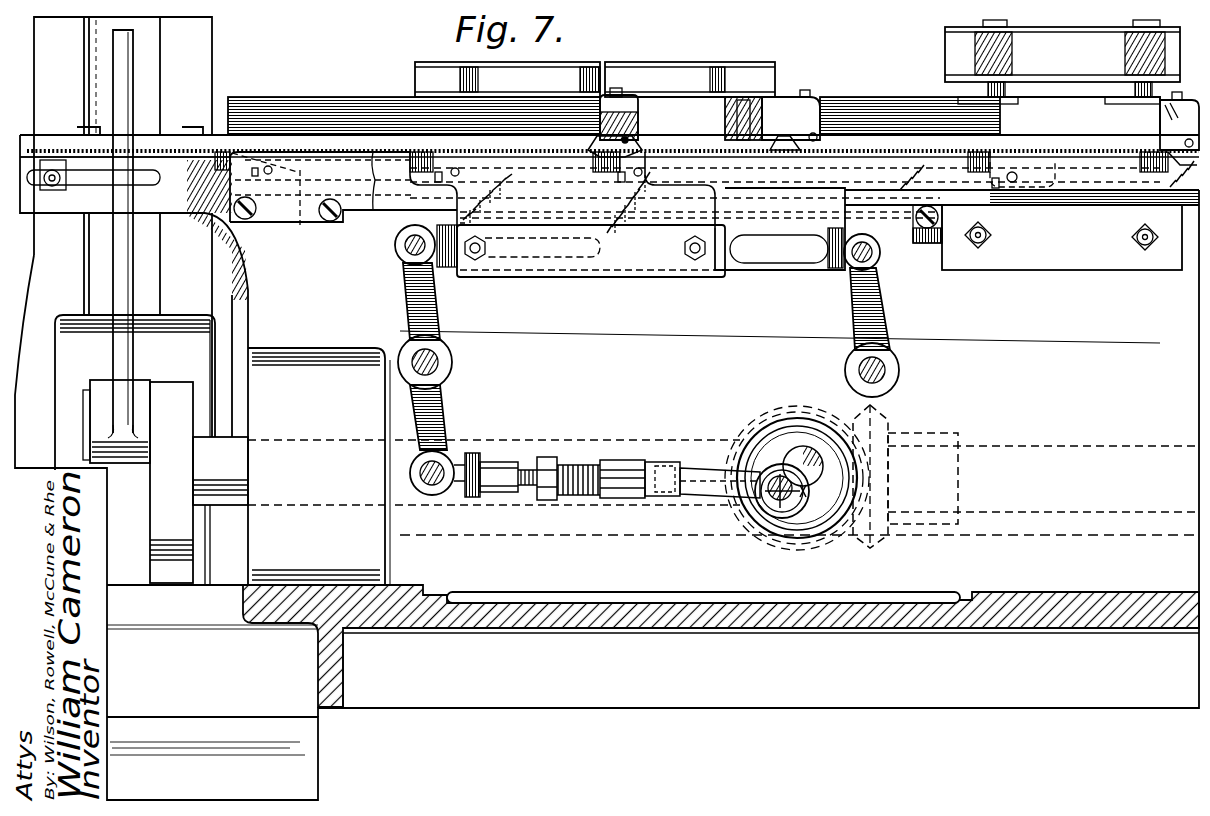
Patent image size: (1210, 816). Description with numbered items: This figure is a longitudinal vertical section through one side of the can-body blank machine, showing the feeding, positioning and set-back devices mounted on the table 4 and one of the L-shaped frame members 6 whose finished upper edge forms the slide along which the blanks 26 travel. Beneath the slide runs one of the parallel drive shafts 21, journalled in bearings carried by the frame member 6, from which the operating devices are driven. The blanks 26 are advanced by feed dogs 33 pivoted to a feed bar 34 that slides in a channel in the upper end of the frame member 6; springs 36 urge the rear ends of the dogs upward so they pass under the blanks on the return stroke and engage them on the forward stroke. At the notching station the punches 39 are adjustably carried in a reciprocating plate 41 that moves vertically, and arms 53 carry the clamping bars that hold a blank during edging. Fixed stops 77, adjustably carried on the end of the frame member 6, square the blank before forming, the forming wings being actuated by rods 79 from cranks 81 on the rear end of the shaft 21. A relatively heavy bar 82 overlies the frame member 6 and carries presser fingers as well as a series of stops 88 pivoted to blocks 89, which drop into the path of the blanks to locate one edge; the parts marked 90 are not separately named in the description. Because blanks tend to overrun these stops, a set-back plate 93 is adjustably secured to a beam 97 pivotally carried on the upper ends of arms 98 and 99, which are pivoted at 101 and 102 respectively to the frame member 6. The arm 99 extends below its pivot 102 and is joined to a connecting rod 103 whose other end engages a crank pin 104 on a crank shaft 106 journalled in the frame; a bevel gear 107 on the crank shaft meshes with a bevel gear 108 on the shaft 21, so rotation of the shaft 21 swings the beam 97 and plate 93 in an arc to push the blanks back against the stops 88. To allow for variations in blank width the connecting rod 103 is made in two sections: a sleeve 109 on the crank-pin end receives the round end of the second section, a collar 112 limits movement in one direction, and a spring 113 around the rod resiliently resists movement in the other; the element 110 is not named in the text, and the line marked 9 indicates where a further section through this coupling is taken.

The table 4 is at (742, 697).
The L-shaped frame members 6 is at (633, 583).
The pivot pin 9 is at (400, 440).
The drive shafts 21 is at (232, 445).
The blanks 26 is at (520, 150).
The feed dogs 33 is at (220, 145).
The feed bars 34 is at (300, 195).
The springs 36 is at (1005, 198).
The punches 39 is at (1020, 90).
The reciprocating plate 41 is at (1180, 59).
The arms 53 is at (477, 72).
The fixed stops 77 is at (42, 160).
The rods 79 is at (120, 275).
The cranks 81 is at (140, 395).
The bars 82 is at (325, 100).
The stops 88 is at (595, 147).
The blocks 89 is at (612, 108).
The slide 90 is at (412, 150).
The plates 93 is at (647, 258).
The beam 97 is at (765, 268).
The arm 98 is at (870, 292).
The arm 99 is at (433, 312).
The pivot 101 is at (885, 372).
The pivot 102 is at (435, 357).
The connecting rod 103 is at (697, 497).
The crank pin 104 is at (778, 500).
The crank shaft 106 is at (812, 458).
The bevel gear 107 is at (772, 425).
The bevel gear 108 is at (886, 430).
The sleeve 109 is at (617, 470).
The nut 110 is at (540, 462).
The collar 112 is at (668, 476).
The spring 113 is at (570, 495).